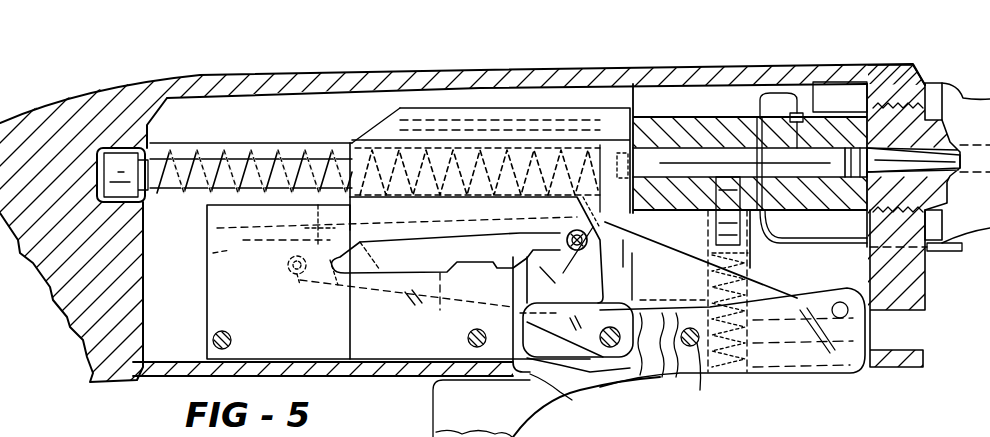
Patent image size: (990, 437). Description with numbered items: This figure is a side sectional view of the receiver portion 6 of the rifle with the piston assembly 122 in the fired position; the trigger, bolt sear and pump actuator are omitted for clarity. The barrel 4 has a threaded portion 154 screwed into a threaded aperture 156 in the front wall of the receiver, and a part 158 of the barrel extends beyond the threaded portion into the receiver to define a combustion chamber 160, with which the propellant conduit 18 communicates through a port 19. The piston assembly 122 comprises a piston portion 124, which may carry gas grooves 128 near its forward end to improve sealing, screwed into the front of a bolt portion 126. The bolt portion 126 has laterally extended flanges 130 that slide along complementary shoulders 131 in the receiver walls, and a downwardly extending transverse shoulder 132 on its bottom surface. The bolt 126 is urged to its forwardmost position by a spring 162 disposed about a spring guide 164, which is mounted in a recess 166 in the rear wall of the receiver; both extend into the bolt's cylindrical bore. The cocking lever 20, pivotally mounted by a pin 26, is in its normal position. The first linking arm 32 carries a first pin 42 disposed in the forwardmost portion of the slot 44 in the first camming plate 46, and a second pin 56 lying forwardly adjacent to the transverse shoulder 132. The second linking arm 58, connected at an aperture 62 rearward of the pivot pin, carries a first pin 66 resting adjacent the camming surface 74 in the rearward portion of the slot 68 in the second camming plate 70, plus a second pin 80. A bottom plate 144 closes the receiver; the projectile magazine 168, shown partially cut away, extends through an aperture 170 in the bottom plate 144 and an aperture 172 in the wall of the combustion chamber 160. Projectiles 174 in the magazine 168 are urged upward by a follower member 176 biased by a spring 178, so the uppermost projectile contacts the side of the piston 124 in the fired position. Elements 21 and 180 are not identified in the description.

The barrel 4 is at (965, 98).
The receiver portion 6 is at (307, 74).
The propellant conduit 18 is at (945, 252).
The port 19 is at (879, 159).
The cocking lever 20 is at (605, 410).
The grip 21 is at (493, 408).
The pin 26 is at (619, 360).
The first linking arm 32 is at (661, 299).
The first laterally protracted pin 42 is at (563, 255).
The slot 44 is at (515, 233).
The first camming plate 46 is at (248, 310).
The second laterally protracted pin 56 is at (701, 260).
The second linking arm 58 is at (440, 295).
The aperture 62 is at (654, 427).
The first laterally protracted pin 66 is at (318, 226).
The slot 68 is at (334, 286).
The second camming plate 70 is at (210, 260).
The camming surface 74 is at (290, 258).
The second laterally protracted pin 80 is at (300, 285).
The piston assembly 122 is at (638, 100).
The piston portion 124 is at (718, 158).
The bolt portion 126 is at (540, 115).
The gas grooves 128 is at (842, 222).
The laterally extended flanges 130 is at (445, 150).
The shoulders 131 is at (343, 147).
The transverse shoulder 132 is at (588, 238).
The bottom plate 144 is at (175, 378).
The threaded portion 154 is at (880, 100).
The threaded aperture 156 is at (929, 84).
The part of the barrel 158 is at (810, 115).
The combustion chamber 160 is at (832, 150).
The spring 162 is at (298, 163).
The spring guide 164 is at (238, 165).
The recess 166 is at (132, 153).
The projectile magazine 168 is at (770, 270).
The aperture 170 is at (743, 372).
The aperture 172 is at (770, 216).
The projectiles 174 is at (712, 224).
The follower member 176 is at (750, 255).
The spring 178 is at (752, 338).
The stud 180 is at (890, 436).